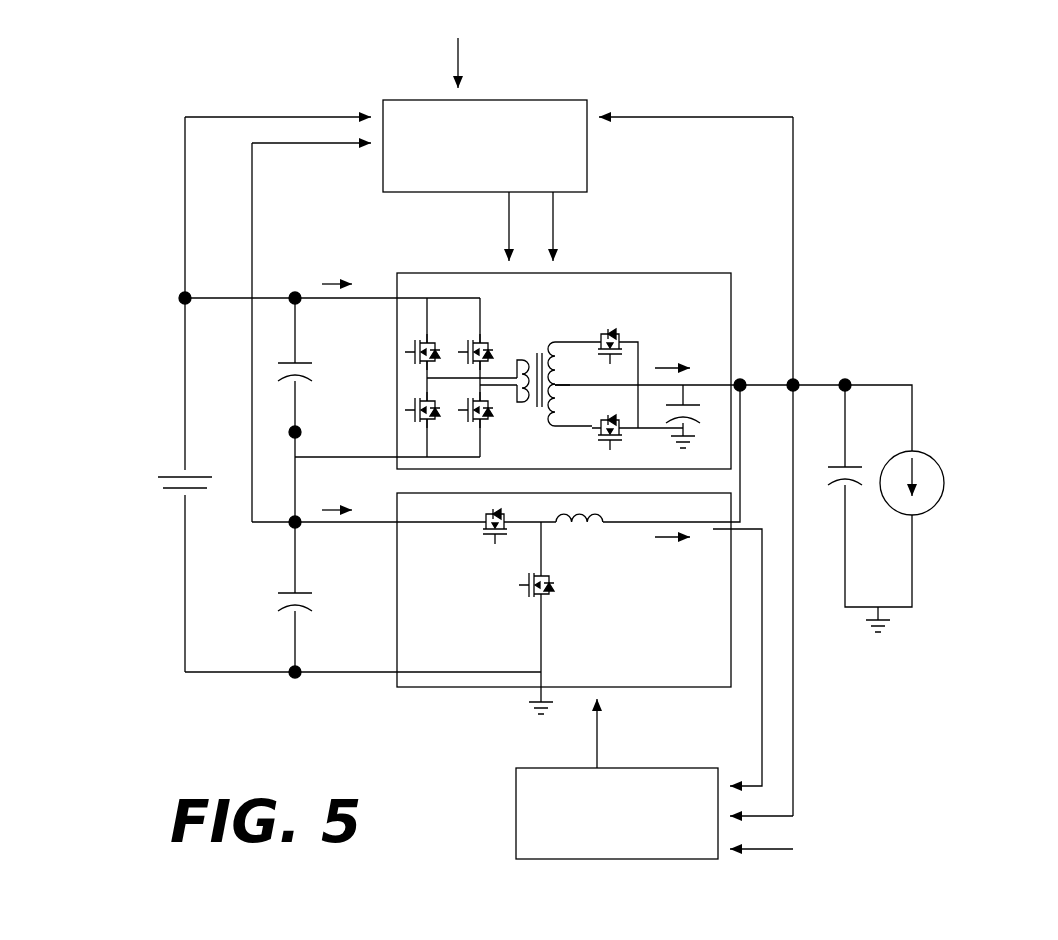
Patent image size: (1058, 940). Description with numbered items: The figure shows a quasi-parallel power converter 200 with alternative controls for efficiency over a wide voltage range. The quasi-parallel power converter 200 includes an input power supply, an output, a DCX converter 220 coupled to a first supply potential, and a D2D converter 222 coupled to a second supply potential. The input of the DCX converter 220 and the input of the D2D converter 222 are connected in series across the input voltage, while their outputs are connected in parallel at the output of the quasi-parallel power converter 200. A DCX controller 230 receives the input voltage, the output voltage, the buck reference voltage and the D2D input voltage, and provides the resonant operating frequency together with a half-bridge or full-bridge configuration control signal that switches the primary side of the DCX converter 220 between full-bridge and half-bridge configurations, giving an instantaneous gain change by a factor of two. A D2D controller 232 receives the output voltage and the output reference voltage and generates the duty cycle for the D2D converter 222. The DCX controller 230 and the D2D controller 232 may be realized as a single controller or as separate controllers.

The quasi-parallel power converter 200 is at (487, 437).
The DCX converter 220 is at (442, 274).
The D2D converter 222 is at (485, 688).
The DCX controller 230 is at (485, 146).
The D2D controller 232 is at (617, 813).